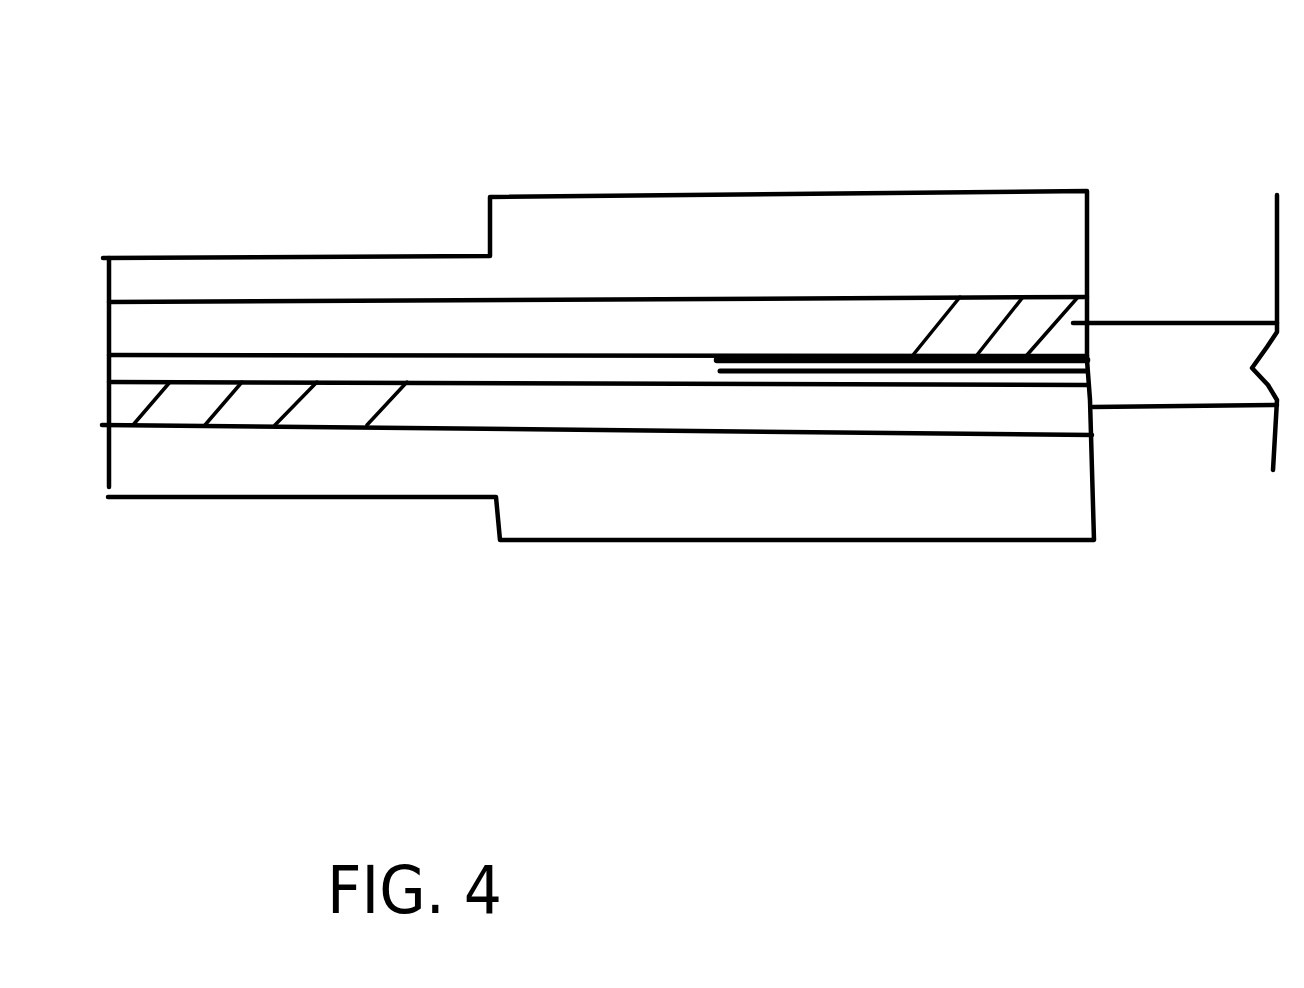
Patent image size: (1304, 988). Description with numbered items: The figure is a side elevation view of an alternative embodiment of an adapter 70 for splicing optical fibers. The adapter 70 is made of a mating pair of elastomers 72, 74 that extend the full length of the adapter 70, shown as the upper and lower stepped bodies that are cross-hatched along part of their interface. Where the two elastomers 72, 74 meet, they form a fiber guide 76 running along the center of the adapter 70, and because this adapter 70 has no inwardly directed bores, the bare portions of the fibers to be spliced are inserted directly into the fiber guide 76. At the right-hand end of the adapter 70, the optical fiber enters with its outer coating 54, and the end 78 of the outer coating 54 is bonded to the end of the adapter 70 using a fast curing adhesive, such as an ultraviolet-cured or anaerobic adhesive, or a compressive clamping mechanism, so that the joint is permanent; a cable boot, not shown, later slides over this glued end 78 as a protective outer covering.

The adapter 70 is at (1097, 390).
The elastomer 72 is at (397, 321).
The elastomer 74 is at (412, 420).
The fiber guide 76 is at (568, 356).
The end of outer coating 78 is at (1107, 322).
The outer coating 54 is at (1174, 318).